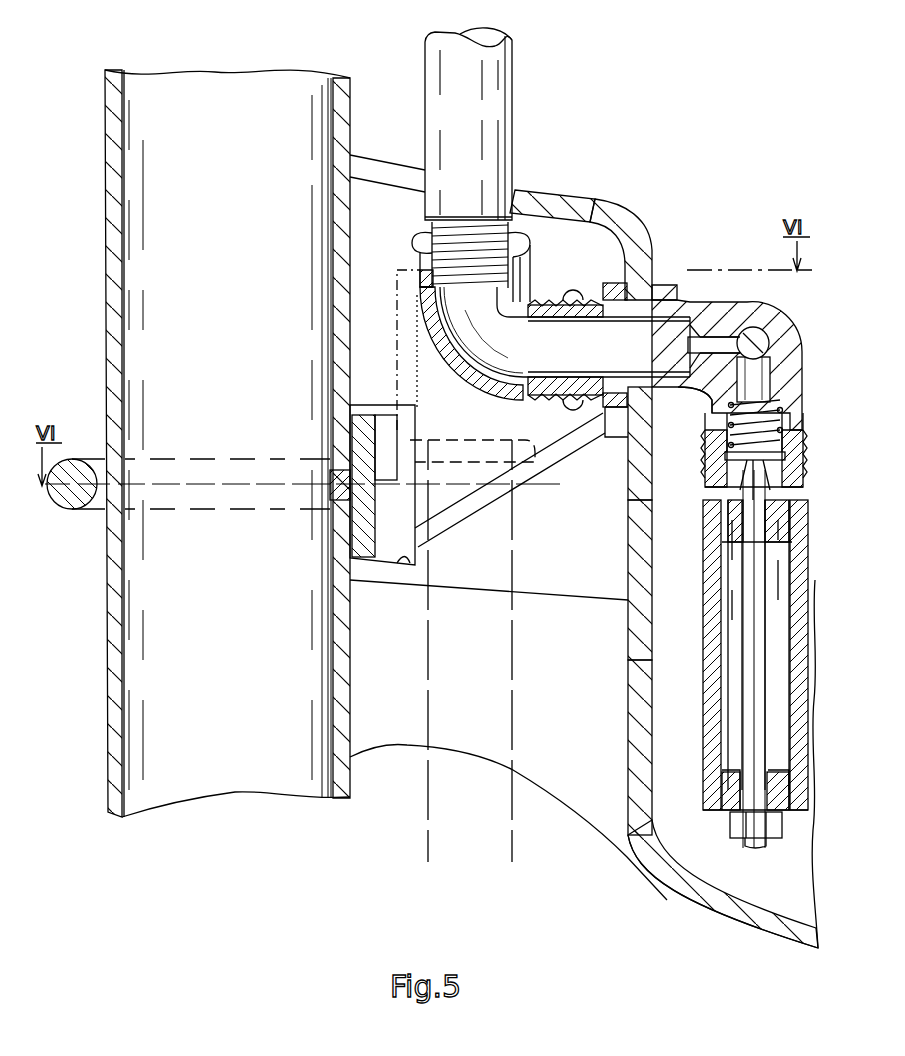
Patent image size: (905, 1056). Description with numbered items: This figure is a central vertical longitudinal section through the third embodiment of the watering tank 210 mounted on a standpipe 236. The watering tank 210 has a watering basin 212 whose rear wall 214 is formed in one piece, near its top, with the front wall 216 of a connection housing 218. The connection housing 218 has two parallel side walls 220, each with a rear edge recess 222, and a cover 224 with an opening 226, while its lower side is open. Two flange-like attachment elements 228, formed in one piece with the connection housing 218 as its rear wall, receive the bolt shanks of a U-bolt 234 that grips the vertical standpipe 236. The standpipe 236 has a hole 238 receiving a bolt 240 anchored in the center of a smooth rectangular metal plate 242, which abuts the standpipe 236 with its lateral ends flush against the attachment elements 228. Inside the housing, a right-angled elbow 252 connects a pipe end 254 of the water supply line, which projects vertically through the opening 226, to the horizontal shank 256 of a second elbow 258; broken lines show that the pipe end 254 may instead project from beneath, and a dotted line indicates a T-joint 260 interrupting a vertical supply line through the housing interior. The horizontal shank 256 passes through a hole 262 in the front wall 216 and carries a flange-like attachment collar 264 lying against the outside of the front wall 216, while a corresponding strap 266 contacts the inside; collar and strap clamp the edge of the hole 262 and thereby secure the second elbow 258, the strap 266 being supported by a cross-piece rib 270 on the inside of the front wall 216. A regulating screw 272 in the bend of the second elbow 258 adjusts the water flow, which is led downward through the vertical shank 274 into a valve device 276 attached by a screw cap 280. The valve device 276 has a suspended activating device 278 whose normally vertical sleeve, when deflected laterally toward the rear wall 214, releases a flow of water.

The watering tank 210 is at (652, 912).
The watering basin 212 is at (742, 930).
The rear wall 214 is at (636, 690).
The front wall 216 is at (636, 524).
The connection housing 218 is at (553, 190).
The side walls 220 is at (510, 480).
The rear edge recess 222 is at (402, 566).
The cover 224 is at (587, 207).
The opening 226 is at (511, 192).
The attachment elements 228 is at (708, 752).
The U-bolt 234 is at (82, 456).
The standpipe 236 is at (180, 782).
The hole 238 is at (330, 503).
The bolt 240 is at (332, 470).
The metal plate 242 is at (385, 425).
The right-angled elbow 252 is at (522, 292).
The pipe end 254 is at (496, 90).
The horizontal shank 256 is at (642, 298).
The second elbow 258 is at (718, 300).
The T-joint 260 is at (430, 352).
The hole 262 is at (644, 458).
The attachment collar 264 is at (678, 402).
The strap 266 is at (610, 288).
The rib 270 is at (628, 436).
The regulating screw 272 is at (756, 328).
The vertical shank 274 is at (712, 432).
The valve device 276 is at (700, 500).
The activating device 278 is at (700, 668).
The screw cap 280 is at (787, 500).